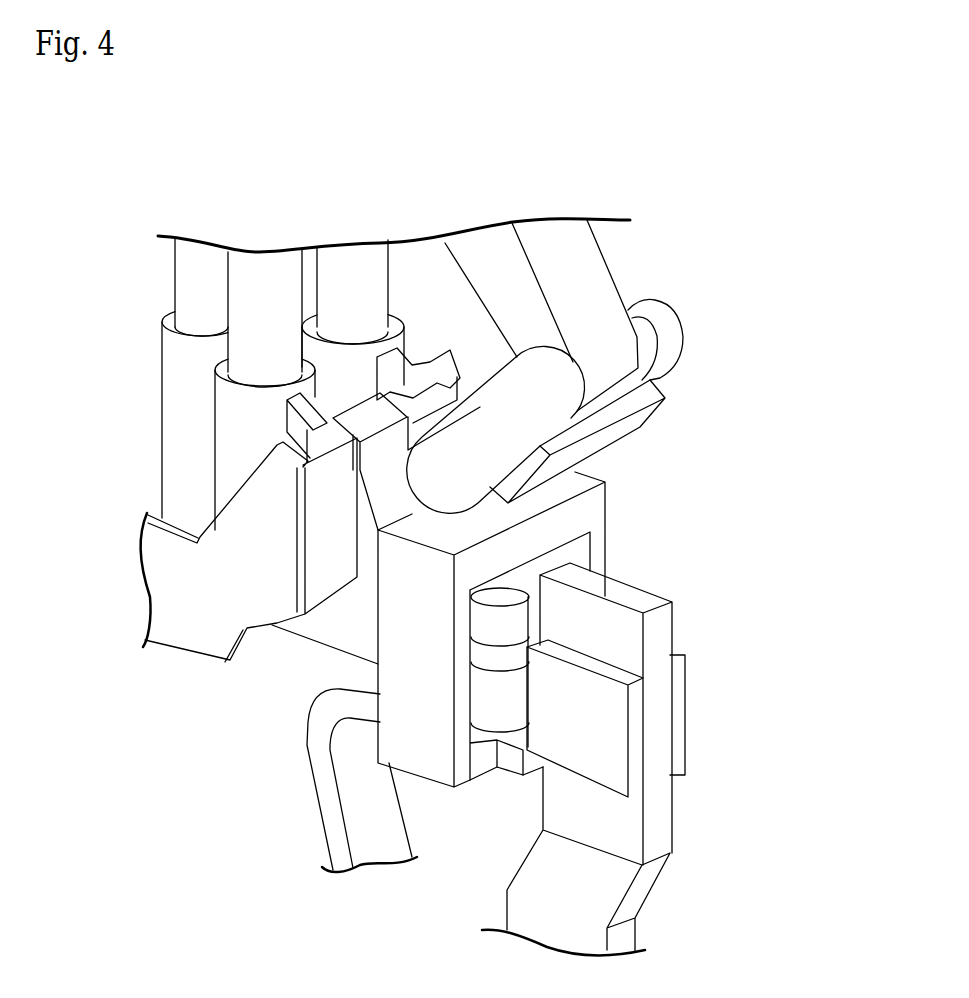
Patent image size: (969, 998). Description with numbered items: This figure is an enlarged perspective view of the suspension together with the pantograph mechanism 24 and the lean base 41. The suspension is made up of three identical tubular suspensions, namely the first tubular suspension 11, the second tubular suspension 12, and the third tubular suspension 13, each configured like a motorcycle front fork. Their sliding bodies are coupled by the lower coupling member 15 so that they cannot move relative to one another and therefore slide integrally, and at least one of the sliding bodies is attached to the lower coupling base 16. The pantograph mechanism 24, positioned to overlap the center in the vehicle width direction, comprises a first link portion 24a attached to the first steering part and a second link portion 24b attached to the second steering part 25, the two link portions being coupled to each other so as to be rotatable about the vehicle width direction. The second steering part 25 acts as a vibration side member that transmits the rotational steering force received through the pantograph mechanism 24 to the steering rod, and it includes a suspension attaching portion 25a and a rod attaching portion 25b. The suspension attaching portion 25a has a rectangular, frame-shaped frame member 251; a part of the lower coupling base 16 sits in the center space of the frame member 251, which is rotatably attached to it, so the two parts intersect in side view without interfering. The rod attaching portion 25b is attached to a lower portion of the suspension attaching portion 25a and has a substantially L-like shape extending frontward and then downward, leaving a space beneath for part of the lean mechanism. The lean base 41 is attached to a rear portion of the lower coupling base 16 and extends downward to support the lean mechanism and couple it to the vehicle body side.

The first tubular suspension 11 is at (164, 274).
The second tubular suspension 12 is at (313, 263).
The third tubular suspension 13 is at (407, 263).
The lower coupling member 15 is at (185, 635).
The lower coupling base 16 is at (335, 664).
The pantograph mechanism 24 is at (636, 366).
The first link portion 24a is at (565, 373).
The second link portion 24b is at (667, 320).
The second steering part 25 is at (251, 780).
The suspension attaching portion 25a is at (361, 760).
The rod attaching portion 25b is at (337, 841).
The frame member 251 is at (443, 752).
The lean base 41 is at (662, 833).